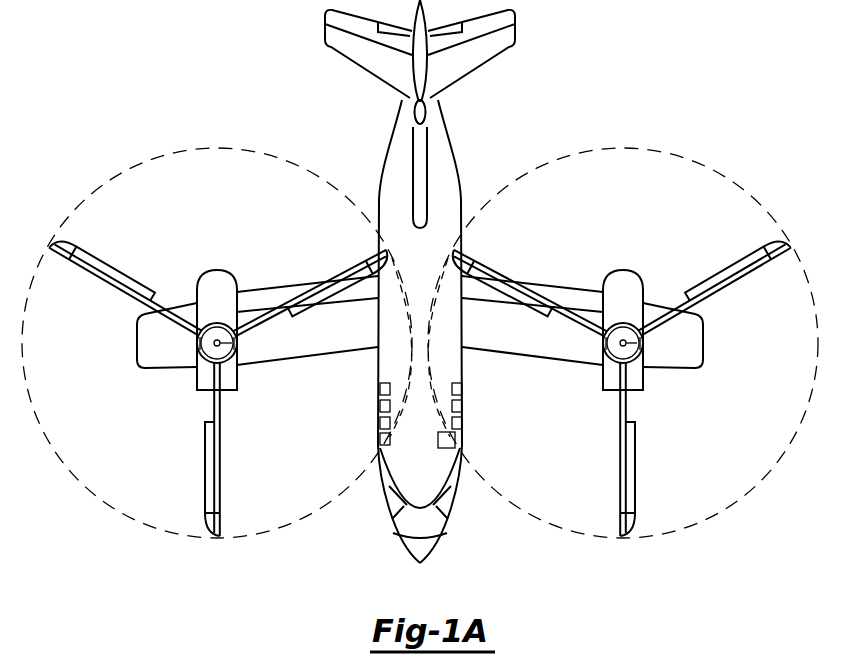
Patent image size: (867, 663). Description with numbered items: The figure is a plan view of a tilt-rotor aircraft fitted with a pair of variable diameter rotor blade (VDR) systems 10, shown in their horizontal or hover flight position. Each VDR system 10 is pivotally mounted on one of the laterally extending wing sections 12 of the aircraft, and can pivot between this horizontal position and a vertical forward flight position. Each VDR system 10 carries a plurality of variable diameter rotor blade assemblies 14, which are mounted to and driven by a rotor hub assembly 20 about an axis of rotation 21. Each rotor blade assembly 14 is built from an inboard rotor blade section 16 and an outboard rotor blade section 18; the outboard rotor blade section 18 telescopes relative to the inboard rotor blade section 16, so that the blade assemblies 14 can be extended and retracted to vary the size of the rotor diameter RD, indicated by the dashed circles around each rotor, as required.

The variable diameter rotor blade (VDR) system 10 is at (420, 380).
The wing section 12 is at (312, 340).
The variable diameter rotor blade assembly 14 is at (420, 371).
The inboard rotor blade section 16 is at (272, 303).
The outboard rotor blade section 18 is at (90, 265).
The rotor hub assembly 20 is at (229, 344).
The axis of rotation 21 is at (202, 346).
The rotor diameter RD is at (632, 148).